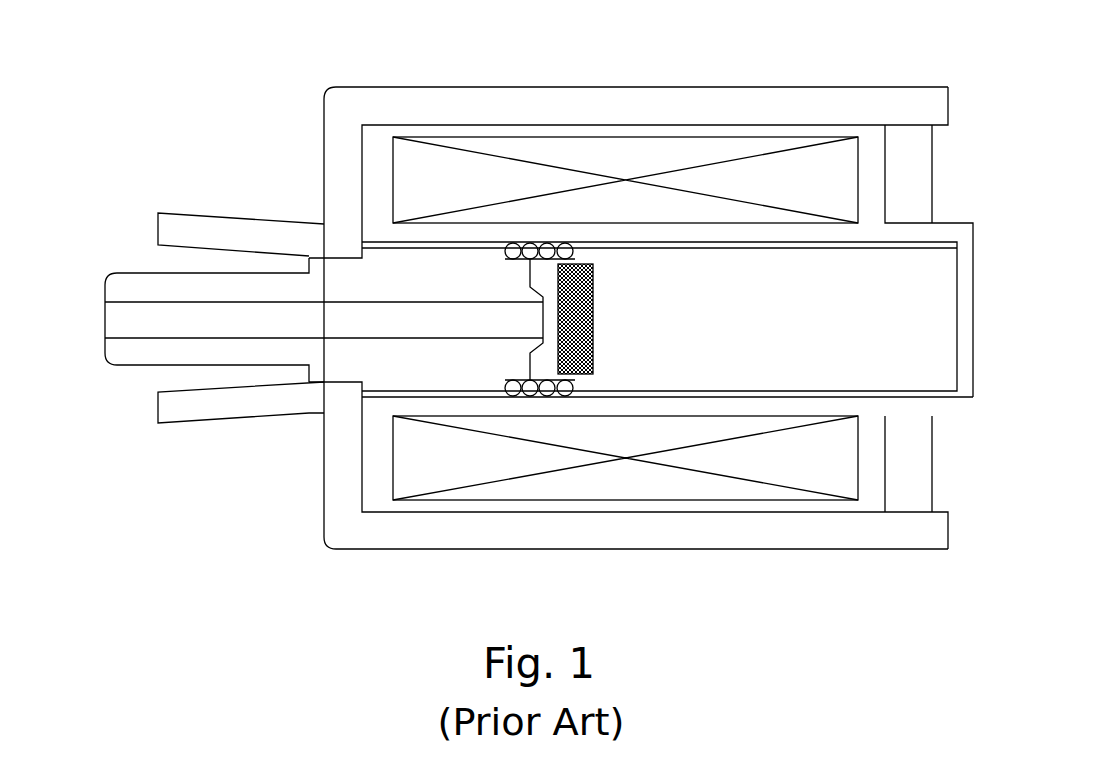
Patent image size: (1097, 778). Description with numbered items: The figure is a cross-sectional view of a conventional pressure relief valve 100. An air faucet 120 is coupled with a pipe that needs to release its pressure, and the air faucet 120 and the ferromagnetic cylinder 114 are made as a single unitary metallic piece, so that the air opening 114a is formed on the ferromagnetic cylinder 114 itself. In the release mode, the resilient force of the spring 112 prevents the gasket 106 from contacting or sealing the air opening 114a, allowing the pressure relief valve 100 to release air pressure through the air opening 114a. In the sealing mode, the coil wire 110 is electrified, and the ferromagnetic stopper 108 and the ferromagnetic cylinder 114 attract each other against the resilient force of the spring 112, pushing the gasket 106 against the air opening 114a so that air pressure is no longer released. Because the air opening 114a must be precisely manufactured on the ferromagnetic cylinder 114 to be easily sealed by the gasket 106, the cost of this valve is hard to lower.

The pressure relief valve 100 is at (127, 88).
The gasket 106 is at (577, 266).
The ferromagnetic stopper 108 is at (932, 325).
The coil wire 110 is at (755, 458).
The spring 112 is at (527, 396).
The ferromagnetic cylinder 114 is at (398, 366).
The air opening 114a is at (539, 322).
The air faucet 120 is at (132, 283).